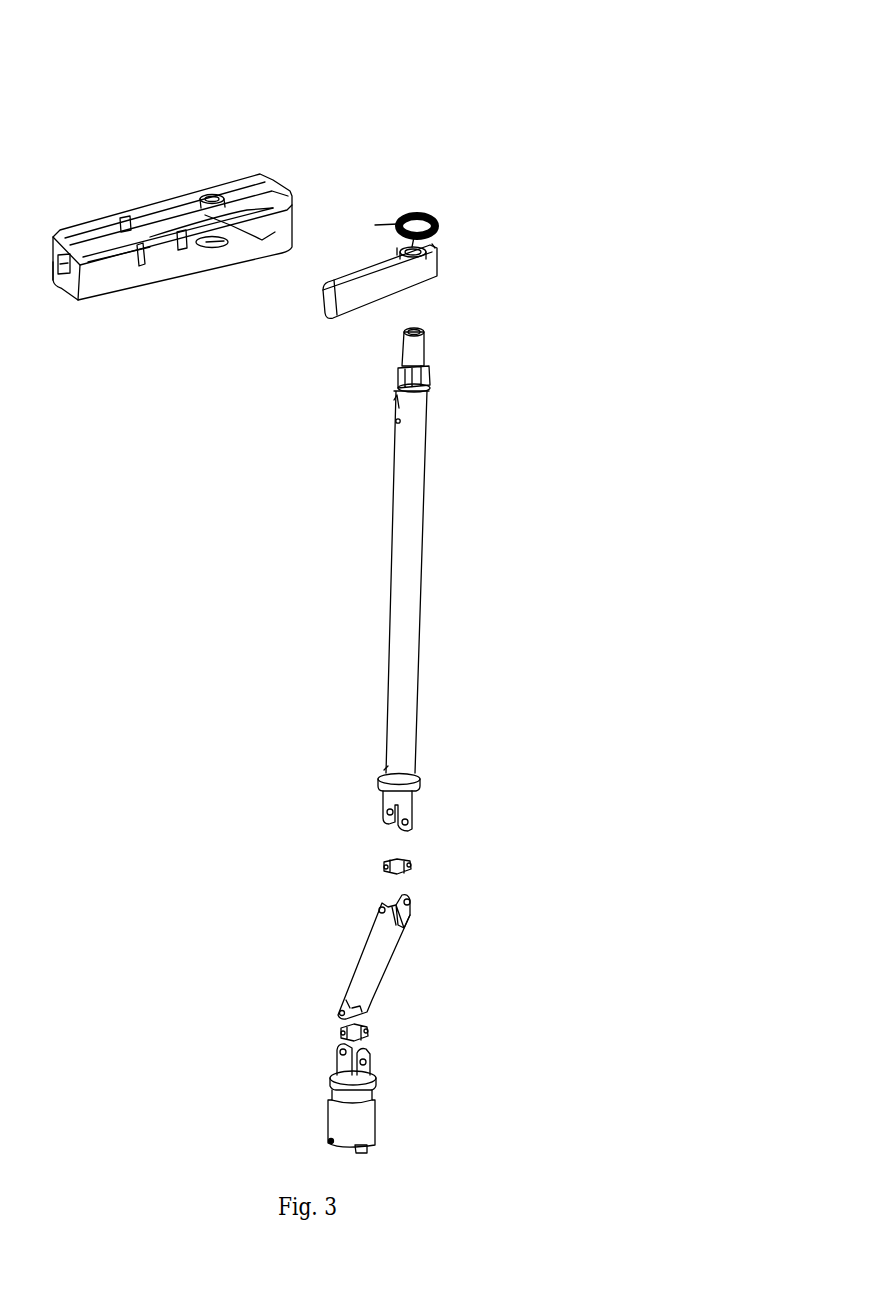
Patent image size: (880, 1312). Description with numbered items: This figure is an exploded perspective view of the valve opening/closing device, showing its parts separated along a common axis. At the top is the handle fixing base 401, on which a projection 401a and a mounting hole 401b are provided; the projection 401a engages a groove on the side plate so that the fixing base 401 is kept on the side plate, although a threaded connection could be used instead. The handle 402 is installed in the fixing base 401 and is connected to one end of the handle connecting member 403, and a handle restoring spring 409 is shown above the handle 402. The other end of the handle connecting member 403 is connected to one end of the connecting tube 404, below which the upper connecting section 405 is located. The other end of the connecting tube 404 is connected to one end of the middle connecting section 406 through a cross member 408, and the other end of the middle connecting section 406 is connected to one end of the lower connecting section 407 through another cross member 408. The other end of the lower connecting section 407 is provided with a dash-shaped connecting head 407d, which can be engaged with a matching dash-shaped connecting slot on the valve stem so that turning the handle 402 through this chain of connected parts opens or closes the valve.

The handle fixing base 401 is at (213, 192).
The projection 401a is at (50, 262).
The mounting hole 401b is at (282, 208).
The handle 402 is at (323, 303).
The handle connecting member 403 is at (427, 357).
The connecting tube 404 is at (405, 632).
The upper connecting section 405 is at (405, 803).
The middle connecting section 406 is at (370, 988).
The lower connecting section 407 is at (360, 1105).
The connecting head 407d is at (370, 1143).
The cross member 408 is at (410, 868).
The handle restoring spring 409 is at (436, 226).